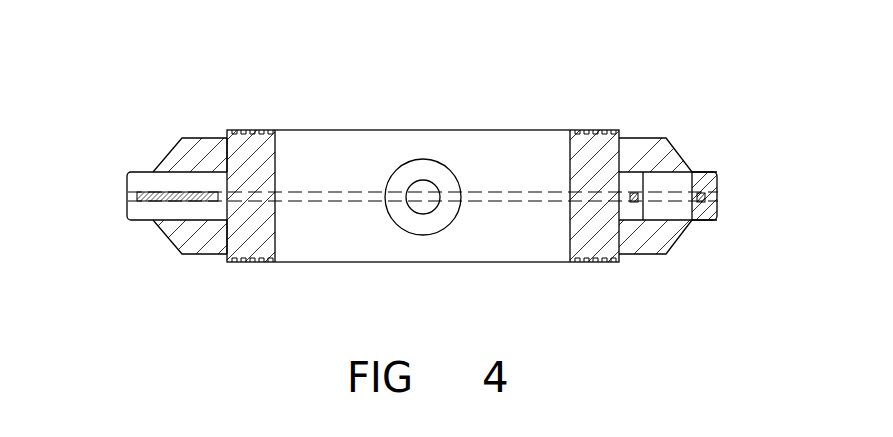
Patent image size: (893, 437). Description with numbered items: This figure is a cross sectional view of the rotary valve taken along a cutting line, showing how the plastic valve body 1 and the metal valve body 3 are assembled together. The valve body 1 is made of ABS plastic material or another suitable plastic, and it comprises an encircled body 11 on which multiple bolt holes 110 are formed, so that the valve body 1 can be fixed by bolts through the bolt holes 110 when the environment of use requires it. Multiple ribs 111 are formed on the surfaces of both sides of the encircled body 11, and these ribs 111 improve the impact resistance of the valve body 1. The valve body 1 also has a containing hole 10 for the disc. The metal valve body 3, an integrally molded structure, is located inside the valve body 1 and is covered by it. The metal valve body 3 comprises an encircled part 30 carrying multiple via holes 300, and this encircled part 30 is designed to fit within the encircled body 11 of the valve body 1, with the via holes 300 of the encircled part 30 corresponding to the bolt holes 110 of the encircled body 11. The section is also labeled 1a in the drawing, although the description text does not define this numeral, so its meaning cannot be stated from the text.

The valve body 1 is at (415, 186).
The positioning hole 1a is at (419, 176).
The containing hole 10 is at (514, 160).
The encircled body 11 is at (160, 193).
The bolt holes 110 is at (674, 216).
The ribs 111 is at (195, 137).
The metal valve body 3 is at (169, 217).
The encircled part 30 is at (153, 172).
The via holes 300 is at (645, 182).